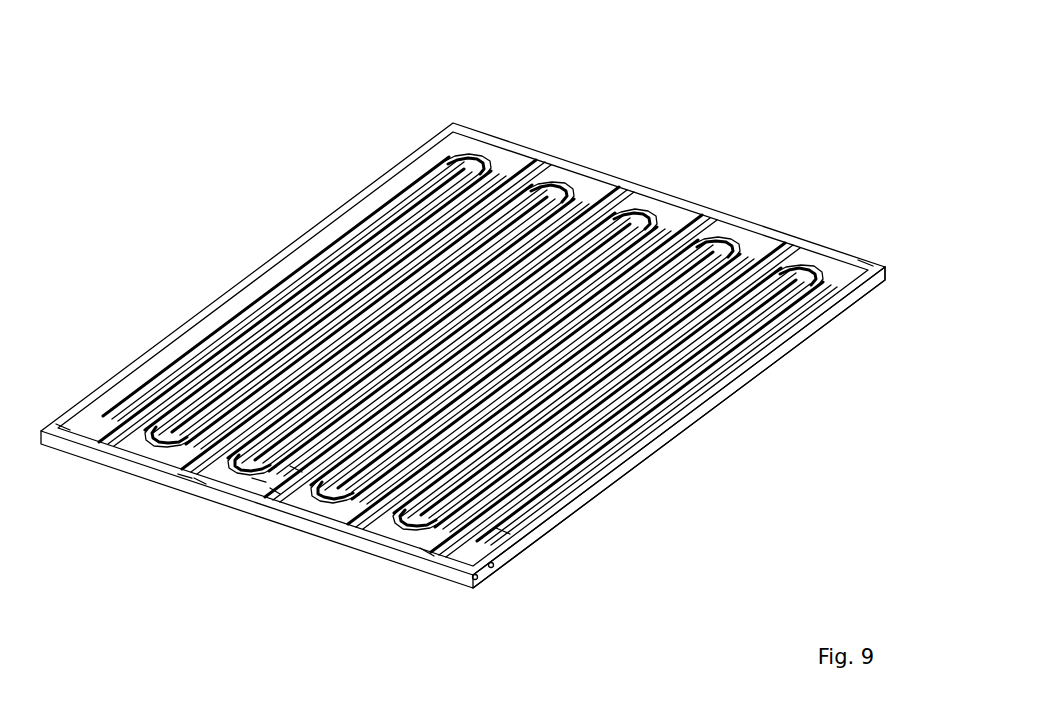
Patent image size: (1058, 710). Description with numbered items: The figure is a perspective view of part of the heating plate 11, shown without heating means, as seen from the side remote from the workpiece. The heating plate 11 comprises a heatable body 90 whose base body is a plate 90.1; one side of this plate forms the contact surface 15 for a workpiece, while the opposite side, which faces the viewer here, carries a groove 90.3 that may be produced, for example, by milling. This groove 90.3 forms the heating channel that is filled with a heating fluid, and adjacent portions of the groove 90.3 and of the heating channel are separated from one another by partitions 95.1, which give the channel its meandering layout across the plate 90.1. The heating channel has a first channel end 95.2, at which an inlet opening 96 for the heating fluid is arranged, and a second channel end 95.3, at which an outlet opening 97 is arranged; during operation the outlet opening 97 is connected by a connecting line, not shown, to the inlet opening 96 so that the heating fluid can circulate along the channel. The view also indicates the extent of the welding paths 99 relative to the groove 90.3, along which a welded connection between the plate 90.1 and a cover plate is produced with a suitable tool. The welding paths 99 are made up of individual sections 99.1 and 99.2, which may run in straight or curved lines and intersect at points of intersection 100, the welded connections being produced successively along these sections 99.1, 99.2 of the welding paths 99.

The heating plate 11 is at (756, 55).
The contact surface 15 is at (859, 276).
The heatable body 90 is at (444, 111).
The plate 90.1 is at (765, 353).
The groove 90.3 is at (856, 248).
The partitions 95.1 is at (510, 130).
The first channel end 95.2 is at (495, 523).
The second channel end 95.3 is at (418, 546).
The inlet opening 96 is at (486, 559).
The outlet opening 97 is at (469, 570).
The welding paths 99 is at (552, 136).
The section 99.1 is at (177, 468).
The section 99.2 is at (250, 472).
The points of intersection 100 is at (192, 473).